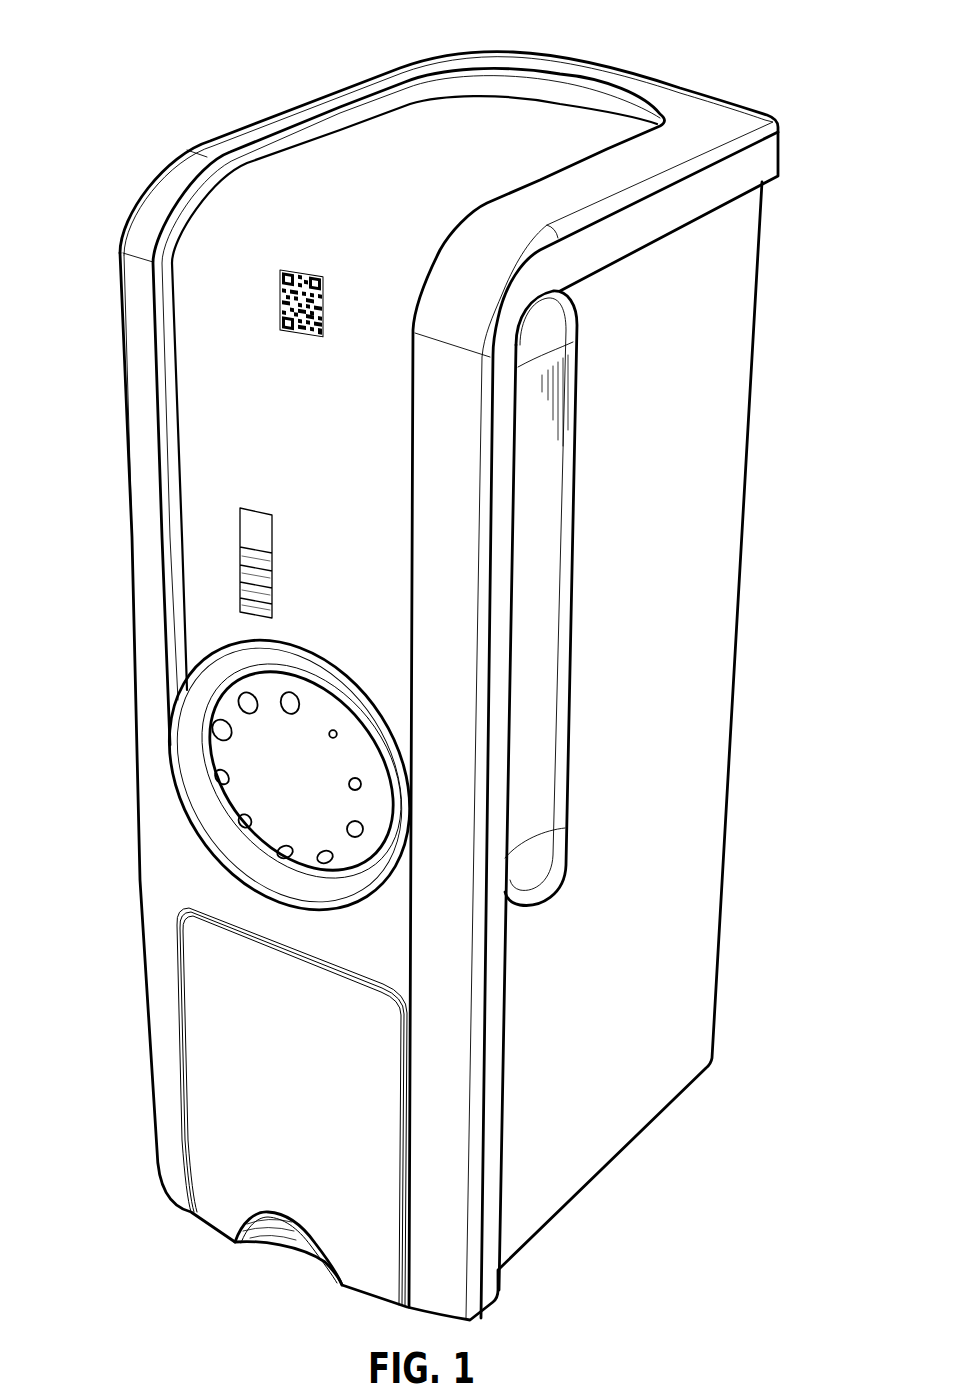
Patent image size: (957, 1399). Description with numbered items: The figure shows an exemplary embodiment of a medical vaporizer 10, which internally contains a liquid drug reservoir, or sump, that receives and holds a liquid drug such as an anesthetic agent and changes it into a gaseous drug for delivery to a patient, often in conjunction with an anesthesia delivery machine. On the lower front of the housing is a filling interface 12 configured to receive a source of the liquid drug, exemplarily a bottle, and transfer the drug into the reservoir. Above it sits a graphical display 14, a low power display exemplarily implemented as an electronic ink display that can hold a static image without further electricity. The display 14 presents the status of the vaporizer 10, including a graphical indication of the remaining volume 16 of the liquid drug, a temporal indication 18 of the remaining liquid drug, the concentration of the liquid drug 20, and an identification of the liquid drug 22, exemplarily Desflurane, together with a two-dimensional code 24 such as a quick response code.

The medical vaporizer 10 is at (197, 66).
The filling interface 12 is at (367, 1092).
The graphical display 14 is at (383, 147).
The remaining volume 16 is at (240, 550).
The temporal indication 18 is at (333, 562).
The concentration of the liquid drug 20 is at (233, 427).
The identification of the liquid drug 22 is at (247, 357).
The two-dimensional code 24 is at (317, 277).